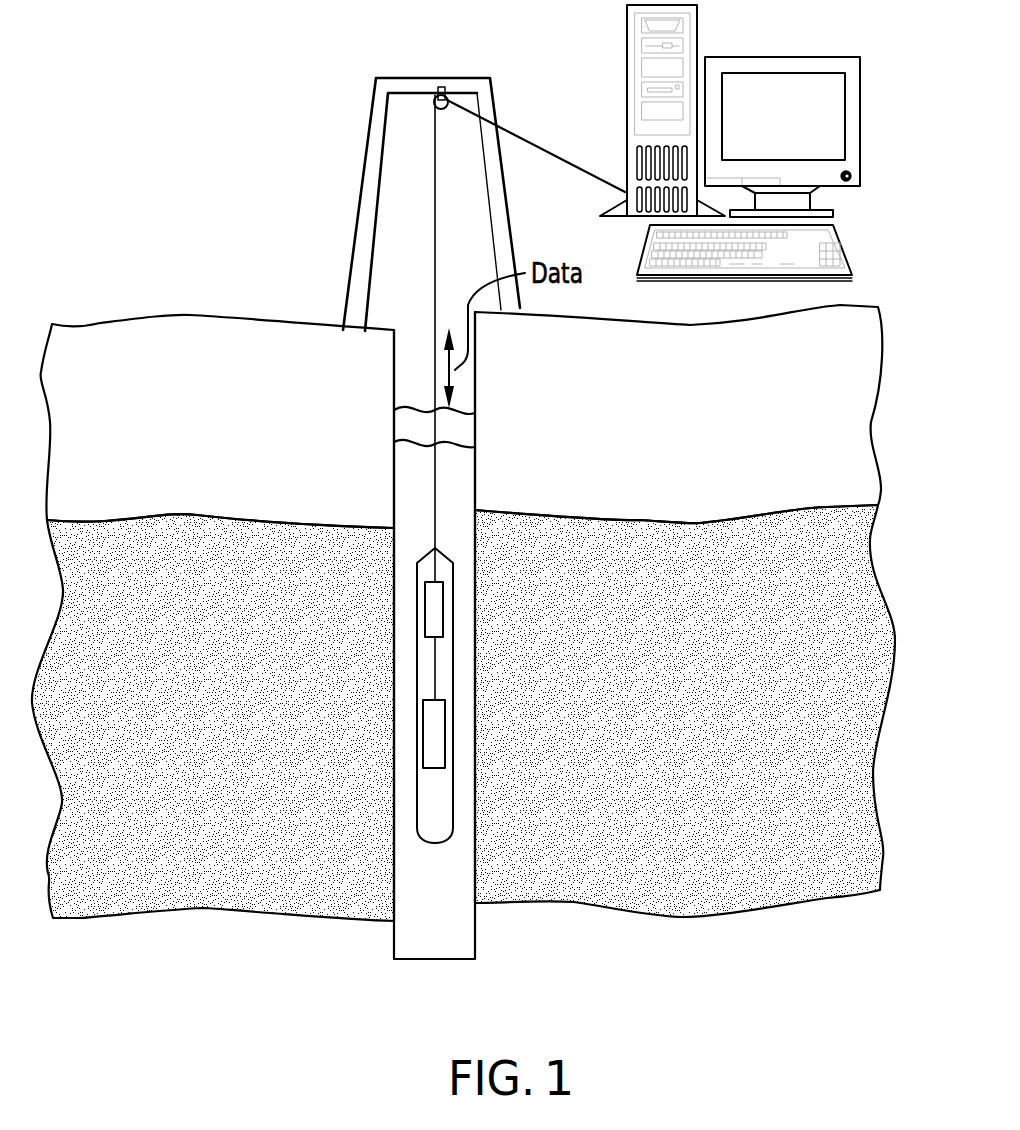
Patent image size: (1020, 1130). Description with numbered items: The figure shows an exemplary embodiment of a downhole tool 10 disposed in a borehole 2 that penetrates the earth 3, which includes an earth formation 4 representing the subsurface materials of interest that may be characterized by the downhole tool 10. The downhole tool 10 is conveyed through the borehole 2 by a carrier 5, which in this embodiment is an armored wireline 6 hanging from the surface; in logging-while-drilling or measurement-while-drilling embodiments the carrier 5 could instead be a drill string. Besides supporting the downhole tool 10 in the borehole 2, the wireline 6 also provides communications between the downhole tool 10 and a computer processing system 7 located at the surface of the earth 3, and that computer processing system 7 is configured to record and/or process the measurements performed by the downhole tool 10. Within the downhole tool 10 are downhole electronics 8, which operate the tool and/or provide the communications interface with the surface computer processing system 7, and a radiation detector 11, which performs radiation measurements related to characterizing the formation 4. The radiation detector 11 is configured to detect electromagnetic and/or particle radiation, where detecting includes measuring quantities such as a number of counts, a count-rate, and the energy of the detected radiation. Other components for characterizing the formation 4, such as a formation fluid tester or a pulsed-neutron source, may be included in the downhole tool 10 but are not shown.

The borehole 2 is at (393, 370).
The earth 3 is at (760, 436).
The earth formation 4 is at (762, 644).
The carrier 5 is at (435, 475).
The armored wireline 6 is at (434, 253).
The computer processing system 7 is at (627, 40).
The downhole electronics 8 is at (425, 612).
The downhole tool 10 is at (378, 695).
The radiation detector 11 is at (423, 730).